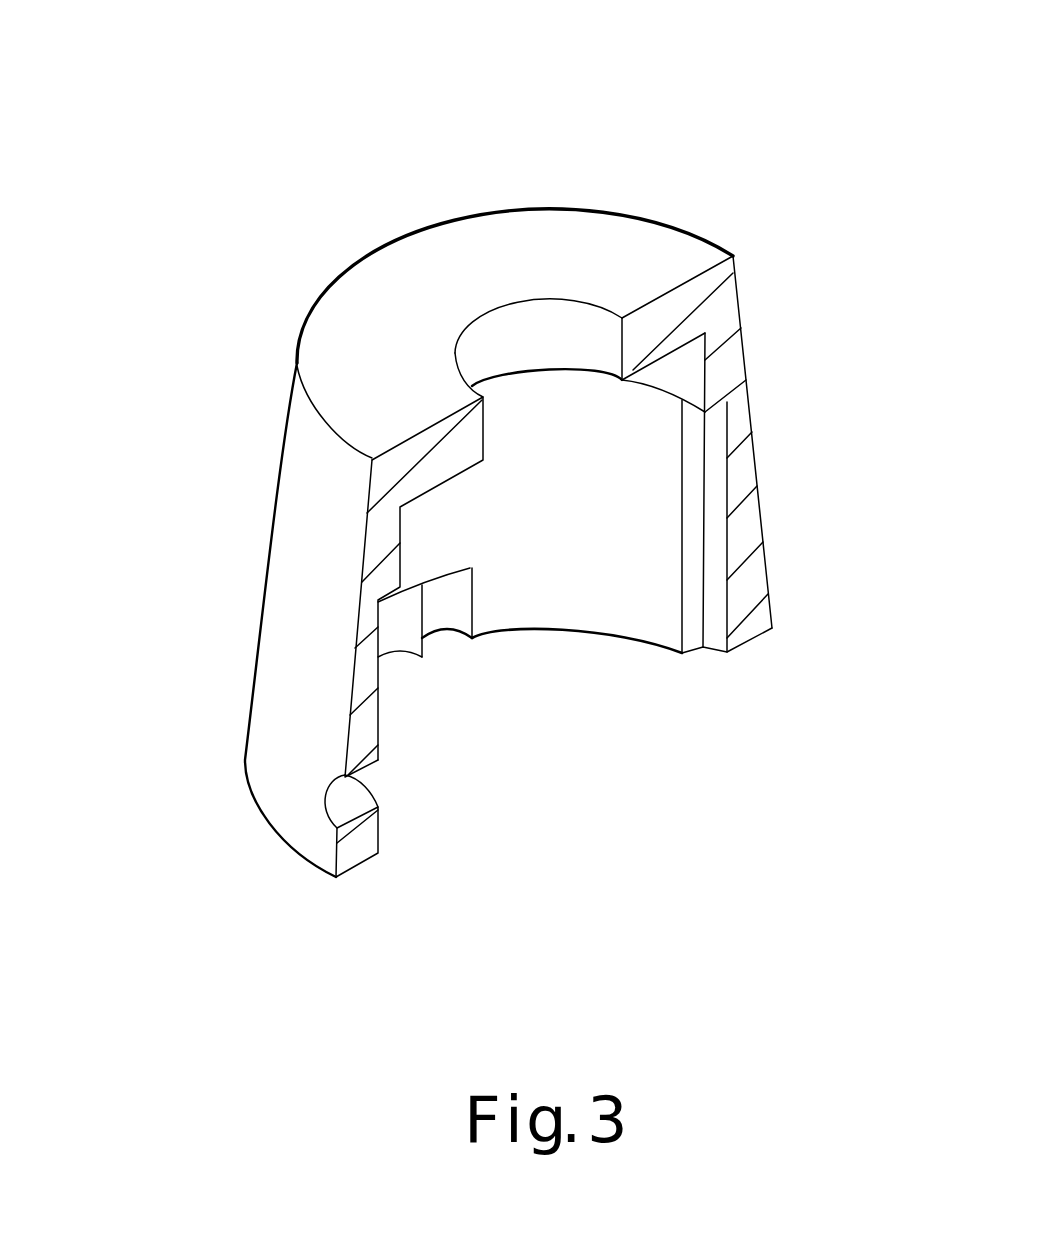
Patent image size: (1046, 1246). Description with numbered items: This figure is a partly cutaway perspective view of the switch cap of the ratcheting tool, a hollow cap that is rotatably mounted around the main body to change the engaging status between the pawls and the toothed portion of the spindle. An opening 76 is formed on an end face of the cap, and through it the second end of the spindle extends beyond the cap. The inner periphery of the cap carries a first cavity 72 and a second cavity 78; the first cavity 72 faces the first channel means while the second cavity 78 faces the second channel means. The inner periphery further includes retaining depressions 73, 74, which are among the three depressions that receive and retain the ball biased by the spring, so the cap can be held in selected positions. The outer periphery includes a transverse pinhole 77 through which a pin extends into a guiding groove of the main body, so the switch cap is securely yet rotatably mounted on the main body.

The first cavity 72 is at (713, 513).
The retaining depression 73 is at (453, 607).
The retaining depression 74 is at (402, 613).
The opening 76 is at (527, 340).
The transverse pinhole 77 is at (343, 793).
The second cavity 78 is at (377, 718).